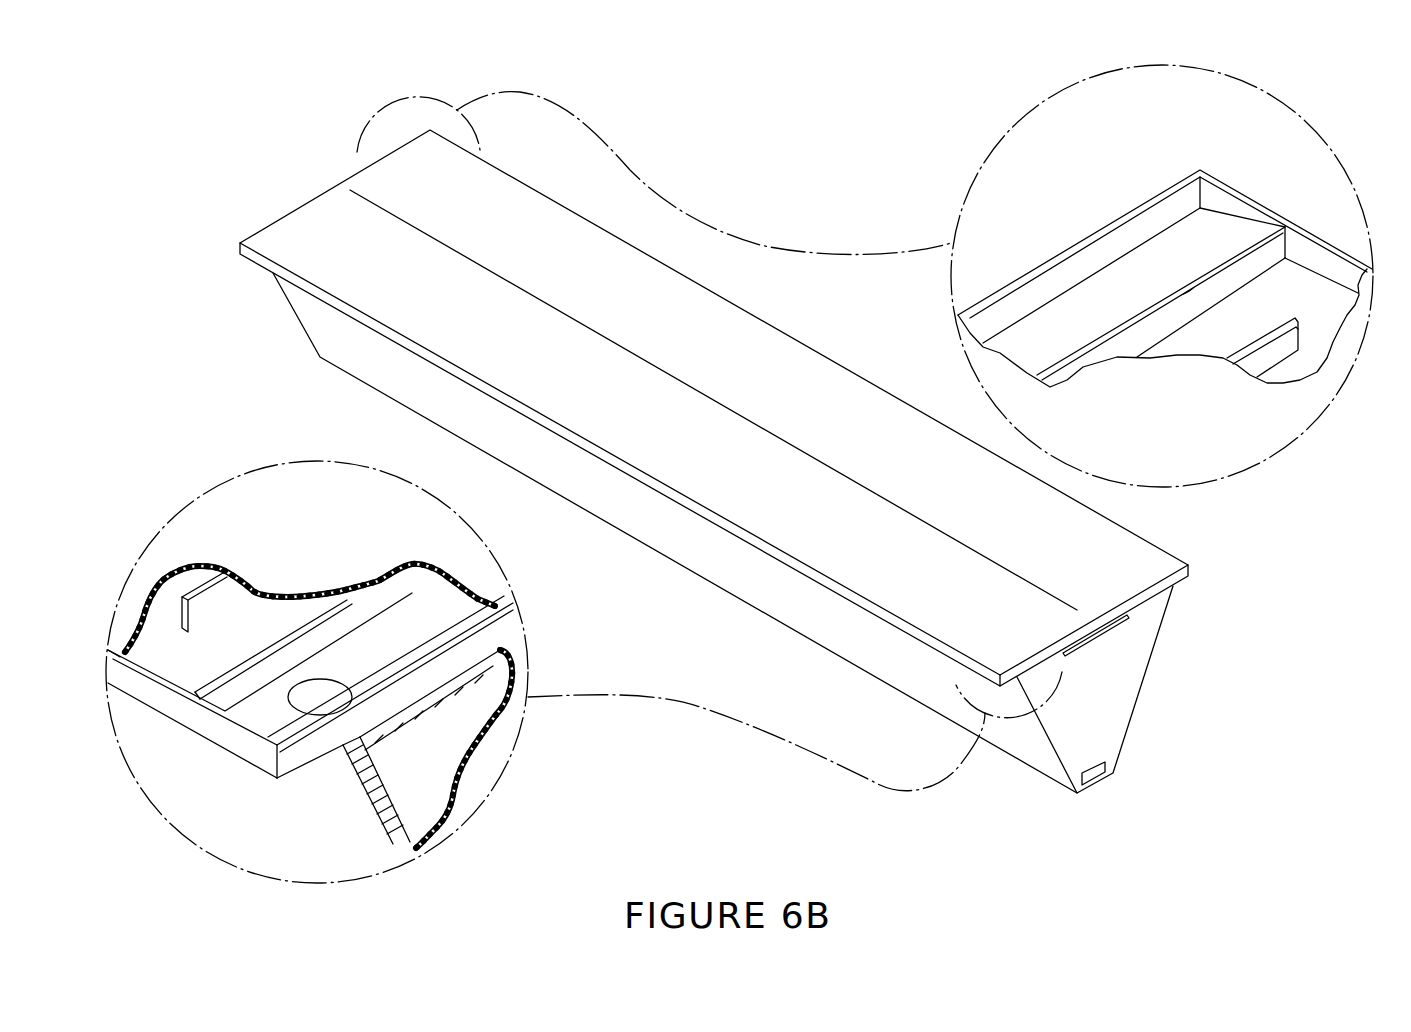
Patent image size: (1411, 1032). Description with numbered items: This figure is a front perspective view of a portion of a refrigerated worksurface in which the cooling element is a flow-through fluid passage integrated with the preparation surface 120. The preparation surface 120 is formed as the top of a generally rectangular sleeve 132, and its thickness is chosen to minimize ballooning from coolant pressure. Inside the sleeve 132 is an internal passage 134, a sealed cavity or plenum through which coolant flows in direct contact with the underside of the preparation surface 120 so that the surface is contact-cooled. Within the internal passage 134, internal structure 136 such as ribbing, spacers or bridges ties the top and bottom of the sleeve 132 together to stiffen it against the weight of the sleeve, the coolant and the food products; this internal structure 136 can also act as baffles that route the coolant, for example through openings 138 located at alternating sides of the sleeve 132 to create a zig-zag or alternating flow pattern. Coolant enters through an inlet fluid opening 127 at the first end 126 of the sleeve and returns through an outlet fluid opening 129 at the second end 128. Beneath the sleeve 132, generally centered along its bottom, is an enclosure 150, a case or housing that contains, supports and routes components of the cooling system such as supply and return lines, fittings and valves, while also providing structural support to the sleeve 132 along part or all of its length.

The preparation surface 120 is at (303, 243).
The first end 126 is at (300, 168).
The inlet fluid opening 127 is at (1165, 272).
The second end 128 is at (1318, 298).
The outlet fluid opening 129 is at (318, 688).
The sleeve 132 is at (303, 285).
The internal passage 134 is at (1040, 335).
The internal structure 136 is at (1258, 257).
The openings 138 is at (157, 618).
The enclosure 150 is at (1118, 693).